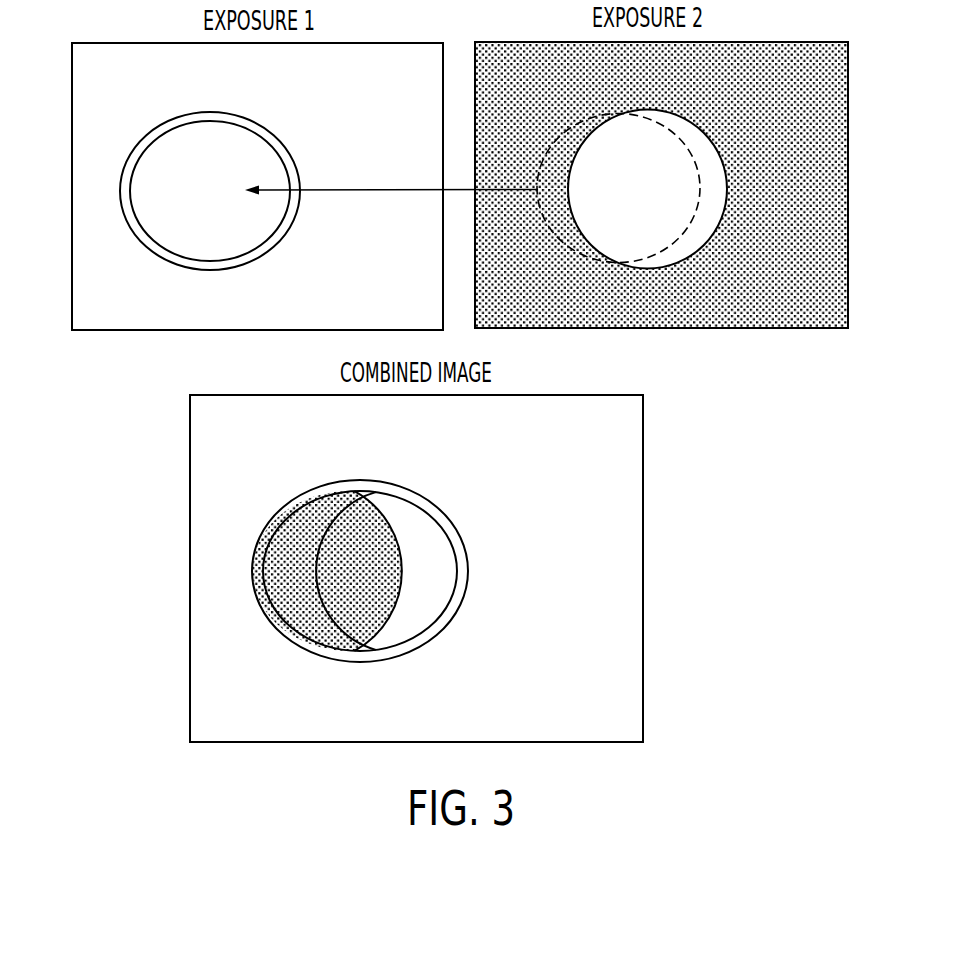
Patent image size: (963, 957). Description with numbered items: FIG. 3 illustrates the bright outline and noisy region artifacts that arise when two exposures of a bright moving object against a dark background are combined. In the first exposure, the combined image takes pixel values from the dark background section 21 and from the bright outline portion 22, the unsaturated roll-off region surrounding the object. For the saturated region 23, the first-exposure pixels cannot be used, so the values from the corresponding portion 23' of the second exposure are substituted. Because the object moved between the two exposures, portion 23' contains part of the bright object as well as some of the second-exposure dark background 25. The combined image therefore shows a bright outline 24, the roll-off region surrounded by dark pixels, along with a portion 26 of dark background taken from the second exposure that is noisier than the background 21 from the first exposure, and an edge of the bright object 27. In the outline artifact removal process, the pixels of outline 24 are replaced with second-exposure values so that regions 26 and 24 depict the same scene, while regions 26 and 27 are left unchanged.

The dark background section 21 is at (88, 109).
The bright outline portion 22 is at (148, 243).
The saturated region 23 is at (188, 191).
The portion of Exposure 2 23' is at (692, 132).
The dark background of Exposure 2 25 is at (832, 260).
The bright outline 24 is at (258, 595).
The portion of dark background from Exposure 2 26 is at (297, 602).
The edge of bright object 27 is at (320, 589).